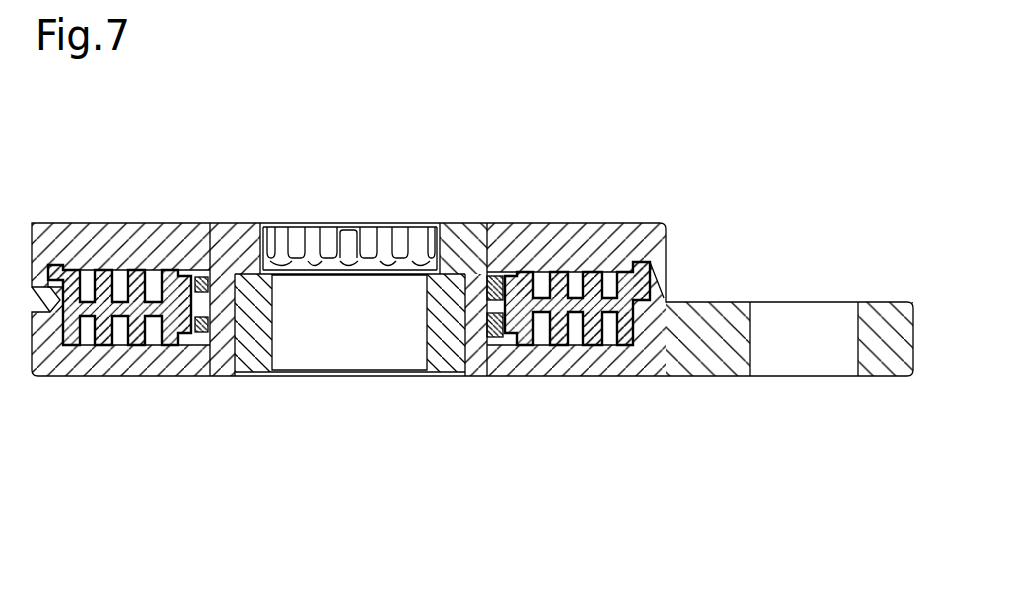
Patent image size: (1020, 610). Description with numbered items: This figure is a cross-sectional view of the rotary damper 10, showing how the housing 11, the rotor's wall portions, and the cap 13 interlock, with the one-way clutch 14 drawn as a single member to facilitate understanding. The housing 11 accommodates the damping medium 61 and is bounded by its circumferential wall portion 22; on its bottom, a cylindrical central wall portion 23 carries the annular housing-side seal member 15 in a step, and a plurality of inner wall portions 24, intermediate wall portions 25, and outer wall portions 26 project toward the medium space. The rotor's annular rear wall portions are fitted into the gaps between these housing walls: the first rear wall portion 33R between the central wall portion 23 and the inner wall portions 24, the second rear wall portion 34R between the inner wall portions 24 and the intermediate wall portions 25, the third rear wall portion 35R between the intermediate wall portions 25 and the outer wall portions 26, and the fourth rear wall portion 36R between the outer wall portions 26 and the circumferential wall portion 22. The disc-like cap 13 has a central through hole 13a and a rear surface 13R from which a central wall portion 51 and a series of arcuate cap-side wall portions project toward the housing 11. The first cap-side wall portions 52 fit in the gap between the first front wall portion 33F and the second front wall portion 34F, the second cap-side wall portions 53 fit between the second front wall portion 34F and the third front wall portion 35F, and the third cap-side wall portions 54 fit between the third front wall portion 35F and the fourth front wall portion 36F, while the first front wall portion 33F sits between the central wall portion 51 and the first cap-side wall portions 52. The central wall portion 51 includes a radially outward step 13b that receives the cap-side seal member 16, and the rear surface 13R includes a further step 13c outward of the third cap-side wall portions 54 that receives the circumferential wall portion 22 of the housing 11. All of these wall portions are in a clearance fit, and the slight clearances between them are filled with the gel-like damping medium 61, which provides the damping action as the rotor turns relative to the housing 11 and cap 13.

The damper 10 is at (750, 145).
The housing 11 is at (50, 347).
The cap 13 is at (32, 232).
The through hole 13a is at (480, 235).
The step 13b is at (215, 268).
The step 13c is at (650, 266).
The rear surface 13R is at (662, 290).
The one-way clutch 14 is at (253, 365).
The housing-side seal member 15 is at (493, 345).
The cap-side seal member 16 is at (462, 232).
The circumferential wall portion 22 is at (52, 263).
The central wall portion 23 is at (192, 347).
The inner wall portions 24 is at (532, 345).
The intermediate wall portions 25 is at (127, 347).
The outer wall portions 26 is at (610, 345).
The first front wall portion 33F is at (522, 272).
The first rear wall portion 33R is at (178, 347).
The second front wall portion 34F is at (136, 270).
The second rear wall portion 34R is at (565, 345).
The third front wall portion 35F is at (590, 272).
The third rear wall portion 35R is at (104, 347).
The fourth front wall portion 36F is at (70, 268).
The fourth rear wall portion 36R is at (628, 345).
The central wall portion 51 is at (183, 275).
The first cap-side wall portions 52 is at (558, 272).
The second cap-side wall portions 53 is at (102, 270).
The third cap-side wall portions 54 is at (625, 272).
The damping medium 61 is at (75, 347).